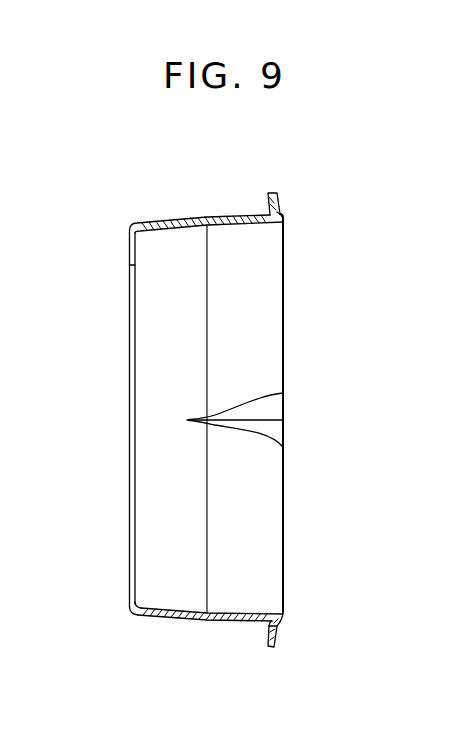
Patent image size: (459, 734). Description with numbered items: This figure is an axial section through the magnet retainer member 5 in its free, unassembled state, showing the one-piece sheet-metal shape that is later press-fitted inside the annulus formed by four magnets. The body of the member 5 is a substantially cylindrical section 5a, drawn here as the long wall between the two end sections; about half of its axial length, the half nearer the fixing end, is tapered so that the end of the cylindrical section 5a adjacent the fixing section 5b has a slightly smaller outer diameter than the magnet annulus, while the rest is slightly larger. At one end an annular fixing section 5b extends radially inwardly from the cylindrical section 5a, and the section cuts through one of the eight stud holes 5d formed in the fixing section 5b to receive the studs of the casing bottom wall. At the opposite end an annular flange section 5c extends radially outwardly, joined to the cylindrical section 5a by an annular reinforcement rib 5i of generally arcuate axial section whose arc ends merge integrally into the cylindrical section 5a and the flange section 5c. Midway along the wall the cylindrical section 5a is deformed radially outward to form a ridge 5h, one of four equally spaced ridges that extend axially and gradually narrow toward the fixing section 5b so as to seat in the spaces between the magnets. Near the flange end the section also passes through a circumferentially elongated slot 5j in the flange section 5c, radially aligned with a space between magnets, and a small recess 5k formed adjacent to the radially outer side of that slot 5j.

The magnet retainer member 5 is at (283, 318).
The cylindrical section 5a is at (220, 621).
The fixing section 5b is at (130, 575).
The flange section 5c is at (278, 641).
The stud holes 5d is at (130, 590).
The ridges 5h is at (228, 217).
The reinforcement rib 5i is at (283, 619).
The slots 5j is at (282, 211).
The recesses 5k is at (275, 193).